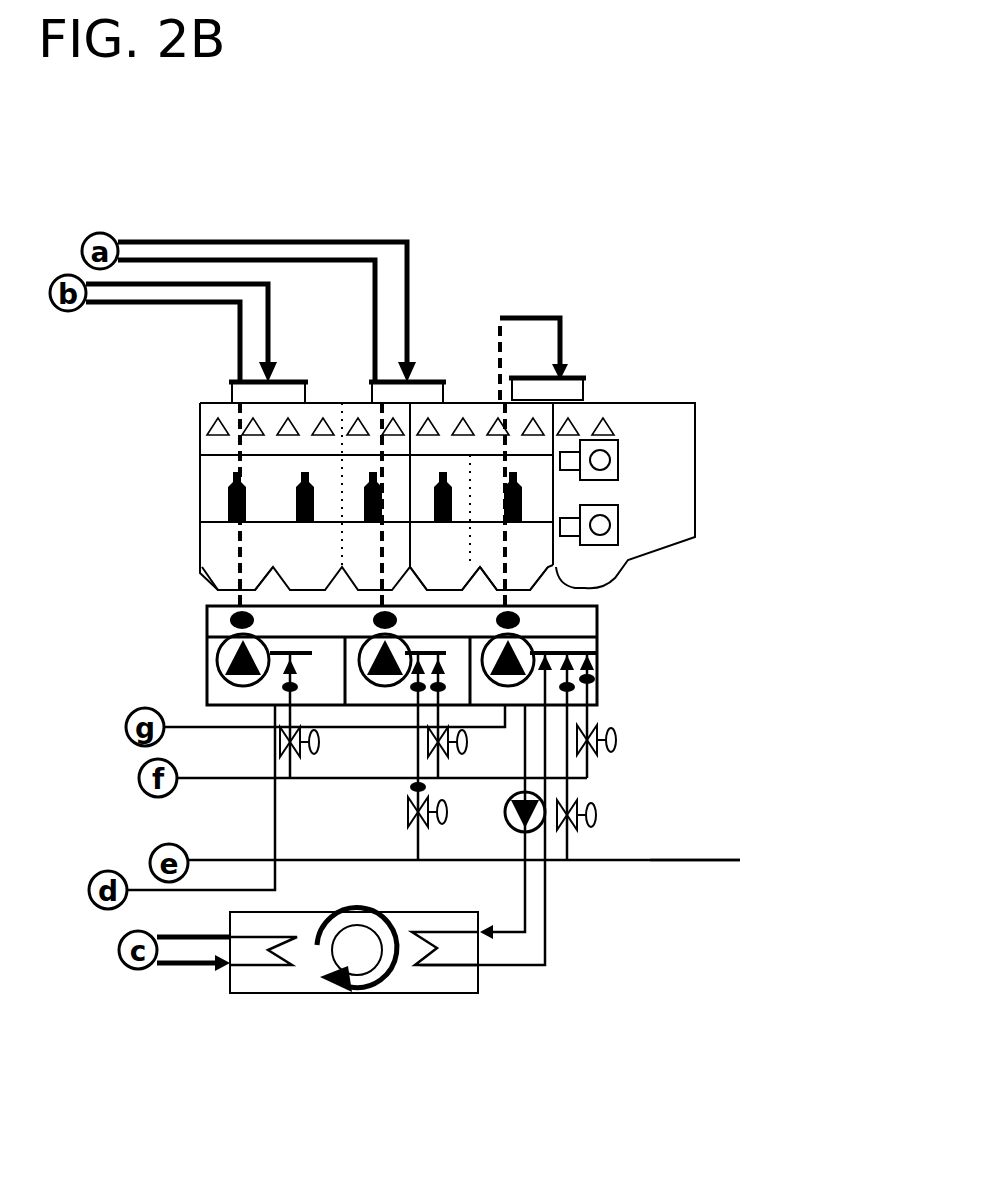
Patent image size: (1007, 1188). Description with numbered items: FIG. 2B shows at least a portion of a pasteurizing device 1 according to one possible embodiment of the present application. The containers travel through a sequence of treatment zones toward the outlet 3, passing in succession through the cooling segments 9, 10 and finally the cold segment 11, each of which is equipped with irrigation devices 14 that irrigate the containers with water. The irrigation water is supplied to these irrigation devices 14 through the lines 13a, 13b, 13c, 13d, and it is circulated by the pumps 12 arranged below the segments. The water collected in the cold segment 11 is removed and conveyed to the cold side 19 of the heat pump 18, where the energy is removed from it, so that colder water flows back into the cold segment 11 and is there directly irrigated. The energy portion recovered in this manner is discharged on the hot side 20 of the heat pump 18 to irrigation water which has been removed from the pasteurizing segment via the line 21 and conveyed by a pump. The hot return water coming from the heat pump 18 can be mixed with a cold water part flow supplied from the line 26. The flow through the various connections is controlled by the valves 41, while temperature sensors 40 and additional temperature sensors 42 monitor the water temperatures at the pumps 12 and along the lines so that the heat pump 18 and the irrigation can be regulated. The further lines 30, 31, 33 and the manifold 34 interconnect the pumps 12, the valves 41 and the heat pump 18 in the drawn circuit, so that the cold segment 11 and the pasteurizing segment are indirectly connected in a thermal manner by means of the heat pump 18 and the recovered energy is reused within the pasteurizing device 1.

The beverage dispensing device 1 is at (660, 283).
The outlet 3 is at (680, 478).
The cooling segment 9 is at (300, 567).
The cooling segment 10 is at (448, 562).
The cold segment 11 is at (530, 468).
The pumps 12 is at (268, 642).
The line 13a is at (287, 238).
The line 13b is at (220, 242).
The line 13c is at (173, 282).
The line 13d is at (137, 243).
The irrigation devices 14 is at (290, 418).
The heat pump 18 is at (360, 957).
The cold side 19 is at (453, 948).
The hot side 20 is at (262, 963).
The line 21 is at (175, 965).
The line 26 is at (652, 858).
The line 30 is at (147, 883).
The line 31 is at (173, 932).
The line 33 is at (245, 782).
The manifold 34 is at (180, 722).
The temperature sensors 40 is at (232, 618).
The valves 41 is at (320, 742).
The additional temperature sensors 42 is at (207, 683).